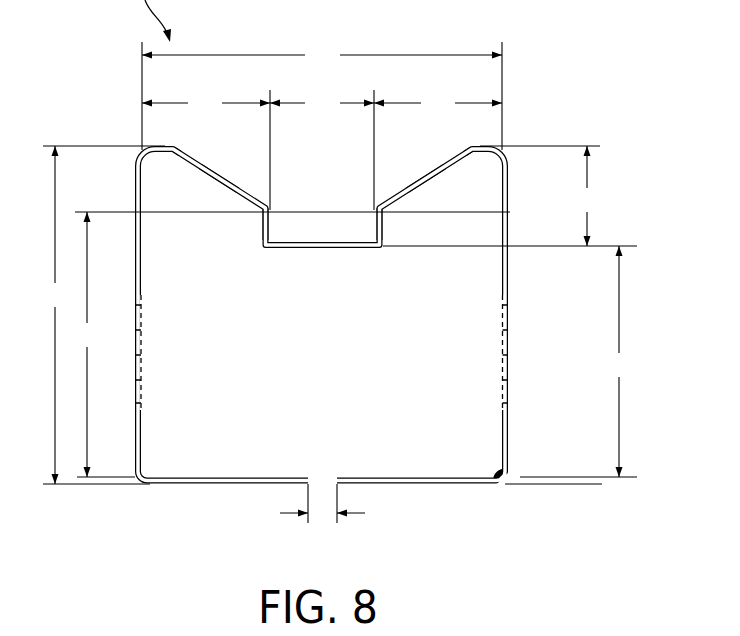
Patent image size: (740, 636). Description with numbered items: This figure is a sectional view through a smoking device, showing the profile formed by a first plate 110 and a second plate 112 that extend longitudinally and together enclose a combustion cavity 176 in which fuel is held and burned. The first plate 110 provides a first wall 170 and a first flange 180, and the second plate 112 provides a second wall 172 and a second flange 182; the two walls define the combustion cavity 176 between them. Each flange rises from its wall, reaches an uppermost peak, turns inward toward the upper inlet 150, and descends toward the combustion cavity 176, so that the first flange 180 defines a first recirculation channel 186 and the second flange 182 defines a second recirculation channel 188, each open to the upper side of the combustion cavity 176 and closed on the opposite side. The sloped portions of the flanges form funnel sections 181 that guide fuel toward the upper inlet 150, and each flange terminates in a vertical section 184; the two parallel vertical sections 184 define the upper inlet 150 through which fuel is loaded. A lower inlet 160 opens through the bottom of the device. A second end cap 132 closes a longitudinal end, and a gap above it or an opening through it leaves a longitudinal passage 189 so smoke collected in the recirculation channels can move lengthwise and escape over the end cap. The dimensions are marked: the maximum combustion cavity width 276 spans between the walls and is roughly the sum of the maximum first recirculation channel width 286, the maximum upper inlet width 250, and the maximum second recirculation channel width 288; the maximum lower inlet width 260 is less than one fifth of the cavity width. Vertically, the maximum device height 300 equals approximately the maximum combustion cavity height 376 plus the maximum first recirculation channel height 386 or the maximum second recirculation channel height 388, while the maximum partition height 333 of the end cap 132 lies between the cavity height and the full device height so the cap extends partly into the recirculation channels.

The first plate 110 is at (145, 486).
The second plate 112 is at (506, 487).
The second end cap 132 is at (481, 382).
The upper inlet 150 is at (296, 246).
The lower inlet 160 is at (320, 479).
The first wall 170 is at (135, 397).
The second wall 172 is at (508, 433).
The combustion cavity 176 is at (204, 433).
The first flange 180 is at (199, 155).
The funnel section 181 is at (227, 179).
The second flange 182 is at (437, 164).
The vertical section 184 is at (259, 226).
The first recirculation channel 186 is at (178, 230).
The second recirculation channel 188 is at (457, 218).
The longitudinal passage 189 is at (153, 200).
The maximum combustion cavity width 276 is at (322, 56).
The maximum first recirculation channel width 286 is at (206, 104).
The maximum upper inlet width 250 is at (322, 104).
The maximum second recirculation channel width 288 is at (438, 104).
The maximum device height 300 is at (55, 315).
The maximum partition height 333 is at (87, 344).
The maximum first recirculation channel height 386 is at (587, 196).
The maximum second recirculation channel height 388 is at (587, 196).
The maximum combustion cavity height 376 is at (619, 361).
The maximum lower inlet width 260 is at (340, 514).